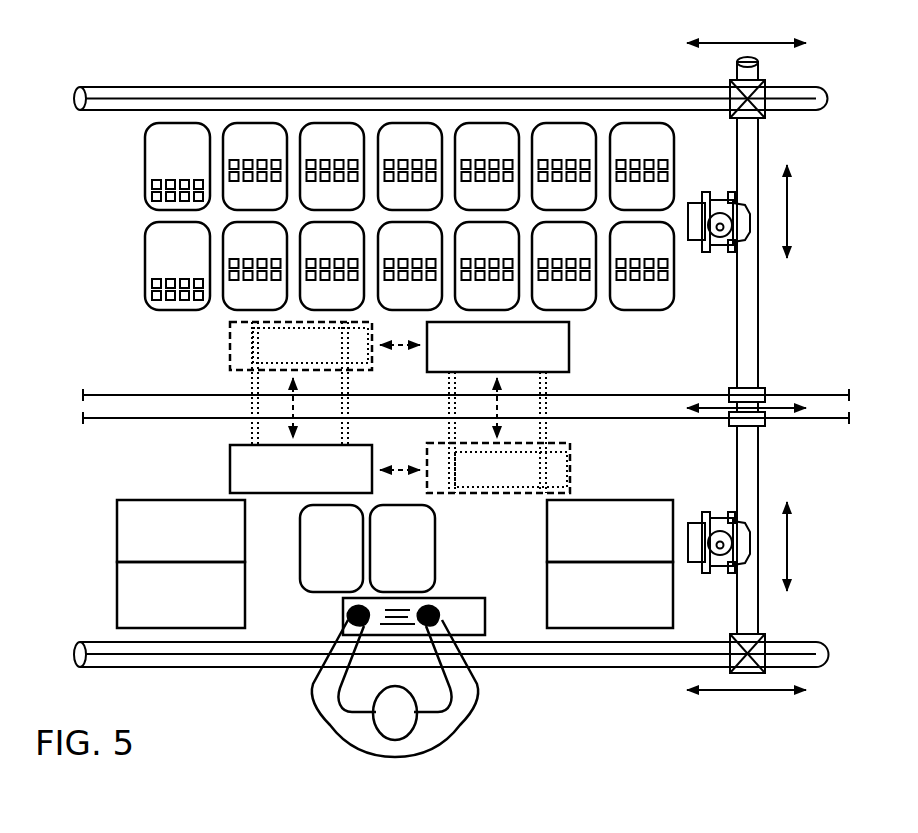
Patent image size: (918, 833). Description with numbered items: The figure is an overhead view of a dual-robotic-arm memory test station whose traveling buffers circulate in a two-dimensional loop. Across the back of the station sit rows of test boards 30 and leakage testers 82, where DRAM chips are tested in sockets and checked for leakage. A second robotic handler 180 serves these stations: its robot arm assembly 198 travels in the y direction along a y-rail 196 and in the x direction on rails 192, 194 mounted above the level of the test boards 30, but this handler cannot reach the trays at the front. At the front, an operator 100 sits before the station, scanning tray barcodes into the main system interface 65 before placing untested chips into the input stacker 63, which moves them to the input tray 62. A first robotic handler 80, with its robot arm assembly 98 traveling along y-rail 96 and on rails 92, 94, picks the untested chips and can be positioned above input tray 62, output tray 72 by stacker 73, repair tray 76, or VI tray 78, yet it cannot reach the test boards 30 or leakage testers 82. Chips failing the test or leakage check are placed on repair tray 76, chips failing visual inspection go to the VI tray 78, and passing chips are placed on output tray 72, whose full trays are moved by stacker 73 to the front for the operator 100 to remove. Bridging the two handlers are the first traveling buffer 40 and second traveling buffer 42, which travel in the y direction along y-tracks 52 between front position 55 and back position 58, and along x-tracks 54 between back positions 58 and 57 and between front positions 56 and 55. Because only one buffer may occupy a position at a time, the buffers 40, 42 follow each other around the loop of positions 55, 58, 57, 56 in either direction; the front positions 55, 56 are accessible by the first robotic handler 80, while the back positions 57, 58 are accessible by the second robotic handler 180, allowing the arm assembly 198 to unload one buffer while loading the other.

The x-rail 192 is at (540, 86).
The leakage tester 82 is at (145, 167).
The test board 30 is at (258, 201).
The robot arm assembly 198 is at (722, 200).
The second robotic handler 180 is at (816, 265).
The y-rail 196 is at (752, 340).
The x-rail 194 is at (805, 393).
The x-rail 94 is at (800, 421).
The x-tracks 54 is at (230, 338).
The back position 58 is at (287, 355).
The back position 57 is at (527, 347).
The second traveling buffer 42 is at (558, 361).
The y-tracks 52 is at (249, 390).
The front position 55 is at (273, 469).
The first traveling buffer 40 is at (361, 483).
The front position 56 is at (489, 478).
The input tray 62 is at (221, 556).
The input stacker 63 is at (232, 590).
The output tray 72 is at (648, 556).
The output stacker 73 is at (662, 590).
The repair tray 76 is at (328, 583).
The VI tray 78 is at (399, 583).
The main system interface 65 is at (480, 627).
The operator 100 is at (330, 708).
The x-rail 92 is at (180, 668).
The y-rail 96 is at (752, 488).
The robot arm assembly 98 is at (720, 514).
The first robotic handler 80 is at (813, 563).